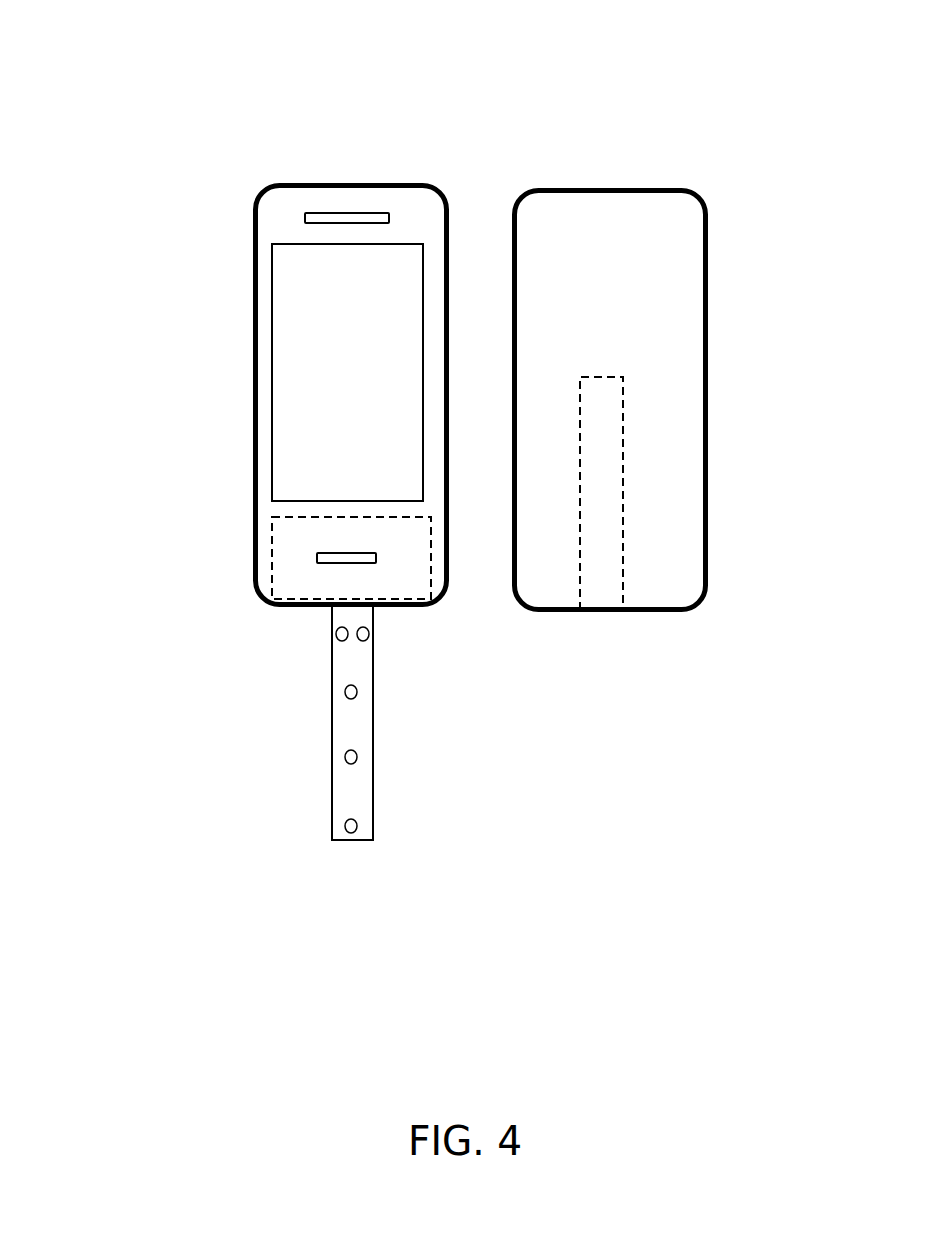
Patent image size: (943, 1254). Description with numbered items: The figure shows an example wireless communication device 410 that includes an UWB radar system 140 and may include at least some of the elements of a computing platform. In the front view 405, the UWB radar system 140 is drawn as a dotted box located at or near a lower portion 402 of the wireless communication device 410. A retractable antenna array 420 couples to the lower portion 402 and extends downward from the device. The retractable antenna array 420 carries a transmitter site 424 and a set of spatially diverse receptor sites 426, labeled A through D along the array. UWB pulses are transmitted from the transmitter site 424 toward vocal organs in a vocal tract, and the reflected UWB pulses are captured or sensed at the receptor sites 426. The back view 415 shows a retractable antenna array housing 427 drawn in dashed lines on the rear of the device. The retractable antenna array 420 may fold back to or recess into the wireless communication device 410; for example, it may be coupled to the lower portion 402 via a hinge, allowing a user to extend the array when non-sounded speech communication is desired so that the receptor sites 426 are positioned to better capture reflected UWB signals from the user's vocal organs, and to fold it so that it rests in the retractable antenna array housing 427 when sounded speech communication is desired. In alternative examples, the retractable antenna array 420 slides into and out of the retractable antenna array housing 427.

The wireless communication device 410 is at (432, 499).
The front view 405 is at (332, 155).
The back view 415 is at (727, 187).
The UWB radar system 140 is at (270, 531).
The lower portion 402 is at (258, 596).
The retractable antenna array 420 is at (383, 807).
The transmitter site 424 is at (375, 634).
The receptor sites 426 is at (331, 636).
The retractable antenna array housing 427 is at (627, 593).